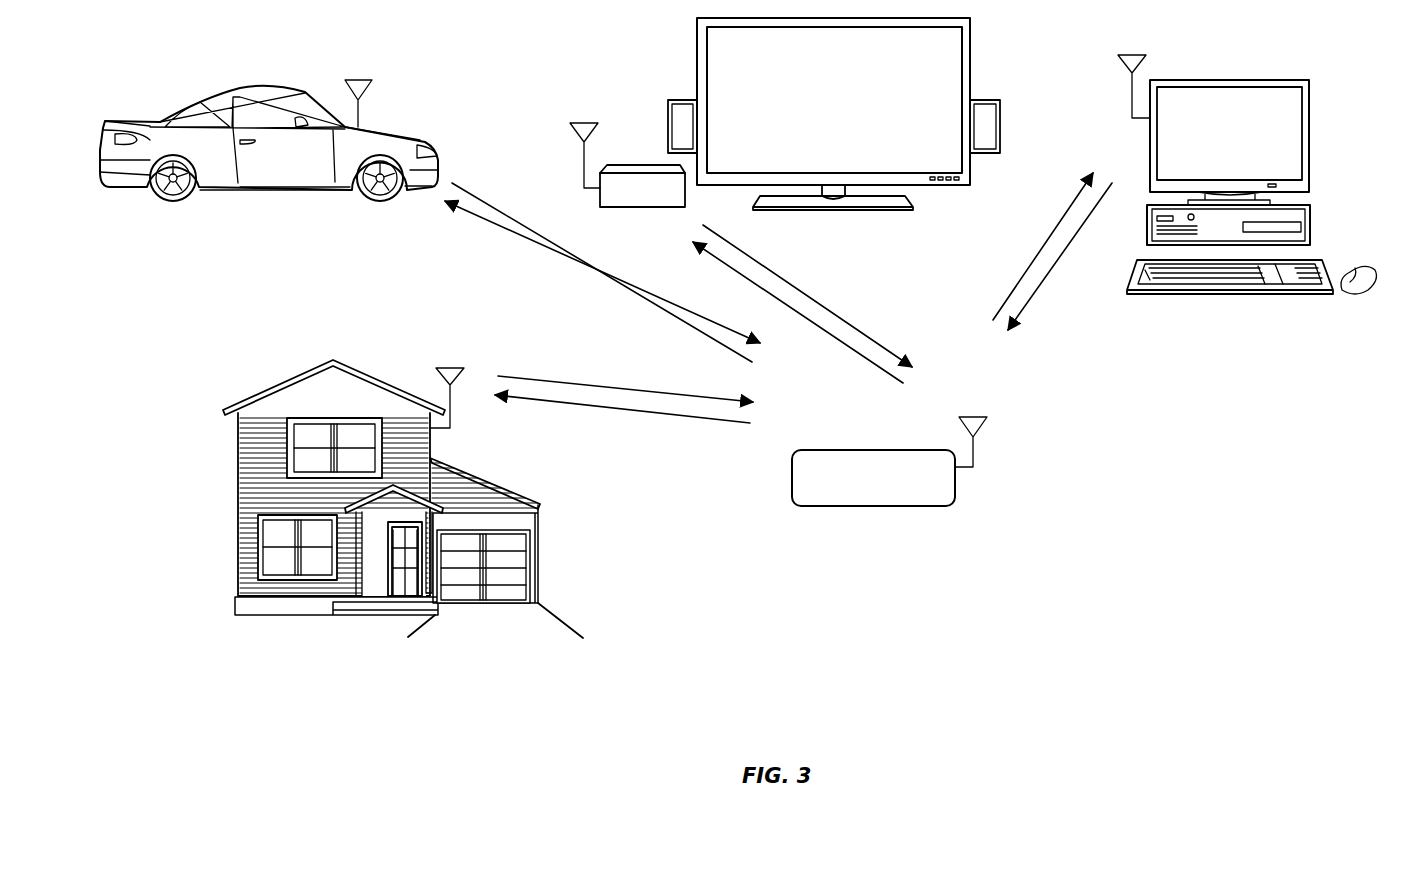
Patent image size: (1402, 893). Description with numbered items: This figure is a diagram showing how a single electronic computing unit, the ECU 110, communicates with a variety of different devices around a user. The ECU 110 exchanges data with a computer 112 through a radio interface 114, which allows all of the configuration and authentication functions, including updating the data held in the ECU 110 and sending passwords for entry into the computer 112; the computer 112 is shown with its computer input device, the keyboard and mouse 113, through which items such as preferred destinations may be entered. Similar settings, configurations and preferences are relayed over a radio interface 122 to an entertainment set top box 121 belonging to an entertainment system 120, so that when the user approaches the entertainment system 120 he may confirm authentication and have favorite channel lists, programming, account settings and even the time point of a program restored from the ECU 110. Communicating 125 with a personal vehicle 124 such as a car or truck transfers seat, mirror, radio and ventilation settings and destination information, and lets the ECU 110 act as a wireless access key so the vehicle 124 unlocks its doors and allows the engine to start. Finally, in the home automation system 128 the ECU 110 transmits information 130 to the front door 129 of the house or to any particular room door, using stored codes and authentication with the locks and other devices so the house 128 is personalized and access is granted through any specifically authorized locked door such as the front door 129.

The ECU 110 is at (925, 508).
The computer 112 is at (1322, 174).
The keyboard and mouse 113 is at (1235, 295).
The radio interface 114 is at (1038, 250).
The entertainment system 120 is at (884, 238).
The entertainment set top box 121 is at (636, 165).
The radio interface 122 is at (862, 355).
The personal vehicle 124 is at (198, 88).
The communicating 125 is at (545, 256).
The home automation system 128 is at (233, 488).
The door 129 is at (397, 582).
The information transmission 130 is at (634, 413).